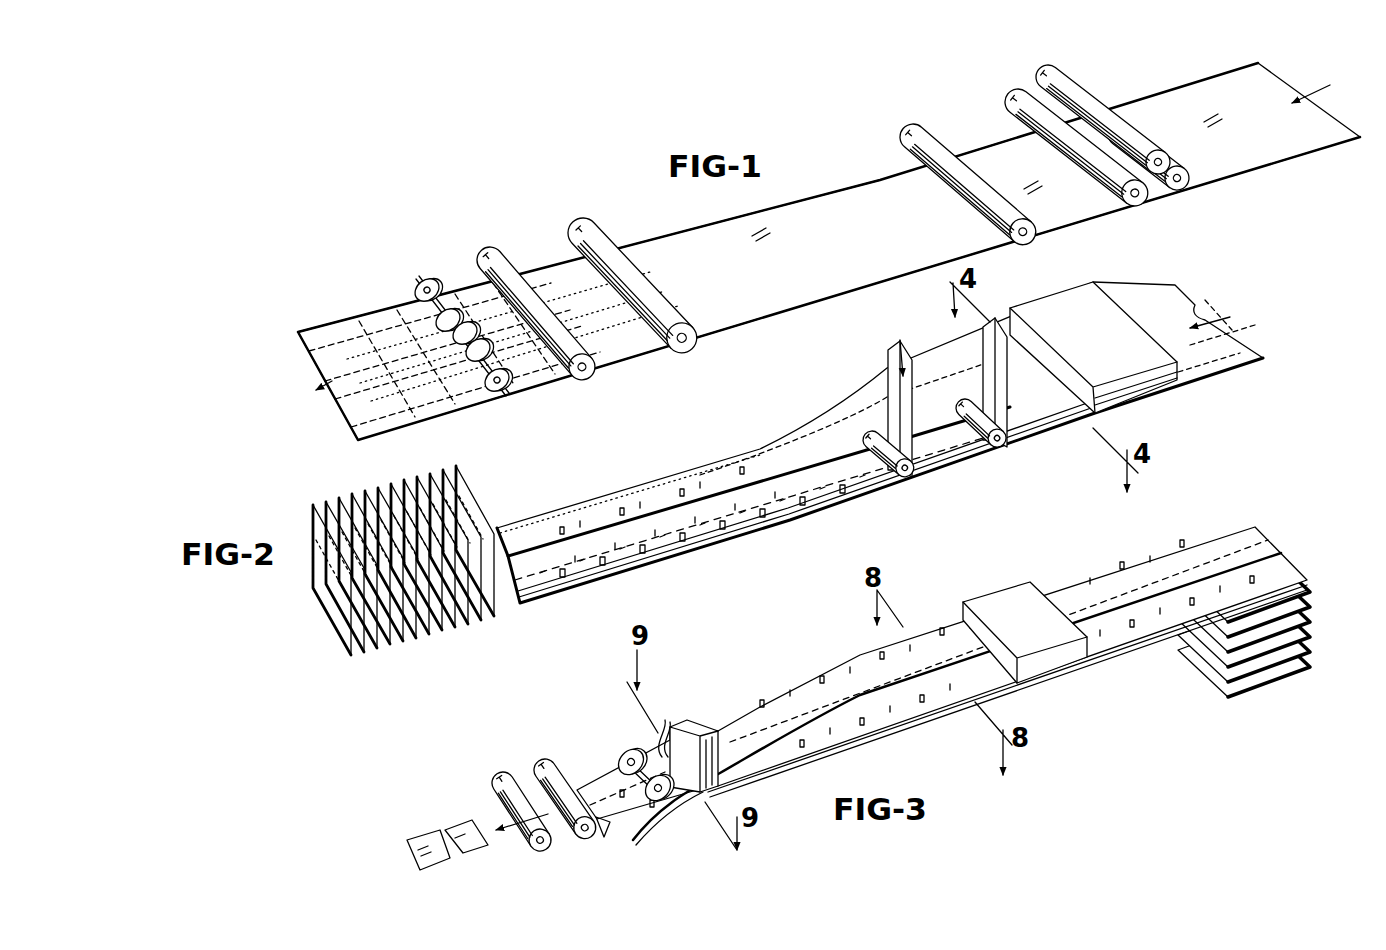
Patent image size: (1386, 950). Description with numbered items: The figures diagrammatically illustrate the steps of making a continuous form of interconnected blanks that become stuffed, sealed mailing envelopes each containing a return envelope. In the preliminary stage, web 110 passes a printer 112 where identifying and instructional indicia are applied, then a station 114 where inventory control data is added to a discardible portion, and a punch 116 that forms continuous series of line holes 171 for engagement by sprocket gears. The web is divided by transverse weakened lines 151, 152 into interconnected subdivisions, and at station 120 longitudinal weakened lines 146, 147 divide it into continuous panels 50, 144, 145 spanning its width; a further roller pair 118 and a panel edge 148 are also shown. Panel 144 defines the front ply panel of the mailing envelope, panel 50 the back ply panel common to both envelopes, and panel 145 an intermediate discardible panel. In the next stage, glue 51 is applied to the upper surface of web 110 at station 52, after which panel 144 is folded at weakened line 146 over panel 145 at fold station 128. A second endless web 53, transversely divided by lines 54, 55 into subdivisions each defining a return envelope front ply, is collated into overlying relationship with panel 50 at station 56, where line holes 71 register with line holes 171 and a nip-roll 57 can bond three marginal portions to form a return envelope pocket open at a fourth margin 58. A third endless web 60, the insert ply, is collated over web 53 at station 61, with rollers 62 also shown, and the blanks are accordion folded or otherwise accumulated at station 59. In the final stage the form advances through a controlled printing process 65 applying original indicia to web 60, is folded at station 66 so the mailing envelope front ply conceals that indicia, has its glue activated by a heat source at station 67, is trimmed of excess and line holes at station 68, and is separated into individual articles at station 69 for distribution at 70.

In FIG. 1, the web 110 is at (1266, 80).
In FIG. 2, the web 110 is at (1188, 305).
In FIG. 1, the printer 112 is at (1033, 97).
In FIG. 1, the station 114 is at (921, 127).
In FIG. 1, the punch 116 is at (614, 233).
In FIG. 1, the roller 118 is at (500, 252).
In FIG. 1, the station 120 is at (421, 275).
In FIG. 1, the transverse weakened line 151 is at (451, 289).
In FIG. 1, the transverse weakened line 152 is at (412, 314).
In FIG. 1, the line holes 171 is at (561, 262).
In FIG. 3, the line holes 171 is at (666, 738).
In FIG. 1, the front ply panel 144 is at (311, 348).
In FIG. 2, the front ply panel 144 is at (841, 398).
In FIG. 3, the front ply panel 144 is at (1196, 555).
In FIG. 1, the intermediate discardible panel 145 is at (322, 374).
In FIG. 2, the intermediate discardible panel 145 is at (801, 422).
In FIG. 3, the intermediate discardible panel 145 is at (650, 745).
In FIG. 1, the longitudinal weakened line 146 is at (355, 345).
In FIG. 2, the longitudinal weakened line 146 is at (660, 473).
In FIG. 1, the longitudinal weakened line 147 is at (423, 413).
In FIG. 2, the longitudinal weakened line 147 is at (1217, 343).
In FIG. 1, the side panel 148 is at (365, 386).
In FIG. 3, the side panel 148 is at (722, 720).
In FIG. 1, the back ply panel 50 is at (353, 420).
In FIG. 2, the back ply panel 50 is at (1055, 405).
In FIG. 2, the glue 51 is at (1082, 395).
In FIG. 2, the glue applying station 52 is at (1082, 298).
In FIG. 2, the second endless web 53 is at (1018, 352).
In FIG. 2, the transverse line 54 is at (996, 355).
In FIG. 2, the transverse line 55 is at (992, 388).
In FIG. 2, the collating station 56 is at (1001, 456).
In FIG. 2, the nip-roll 57 is at (990, 449).
In FIG. 2, the fourth margin 58 is at (996, 461).
In FIG. 2, the accumulating station 59 is at (428, 632).
In FIG. 2, the third endless web 60 is at (886, 357).
In FIG. 3, the third endless web 60 is at (1130, 628).
In FIG. 2, the collating station 61 is at (905, 481).
In FIG. 2, the roller 62 is at (886, 478).
In FIG. 2, the fold station 128 is at (786, 432).
In FIG. 2, the line holes 71 is at (830, 500).
In FIG. 3, the controlled printing process 65 is at (1033, 586).
In FIG. 3, the fold station 66 is at (778, 688).
In FIG. 3, the activating station 67 is at (724, 787).
In FIG. 3, the severing station 68 is at (617, 752).
In FIG. 3, the separating station 69 is at (520, 774).
In FIG. 3, the distribution 70 is at (438, 832).